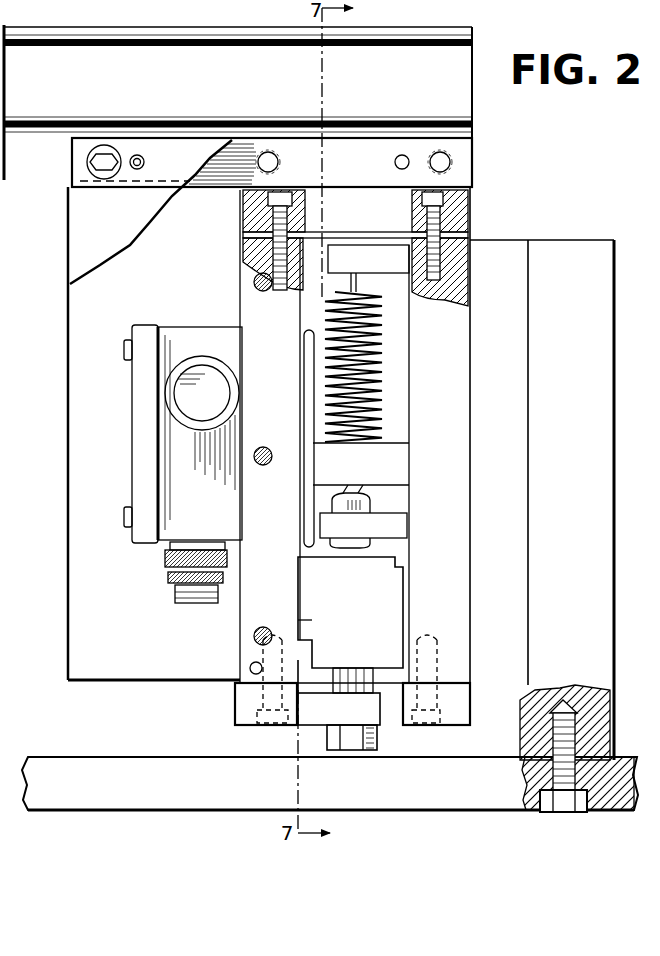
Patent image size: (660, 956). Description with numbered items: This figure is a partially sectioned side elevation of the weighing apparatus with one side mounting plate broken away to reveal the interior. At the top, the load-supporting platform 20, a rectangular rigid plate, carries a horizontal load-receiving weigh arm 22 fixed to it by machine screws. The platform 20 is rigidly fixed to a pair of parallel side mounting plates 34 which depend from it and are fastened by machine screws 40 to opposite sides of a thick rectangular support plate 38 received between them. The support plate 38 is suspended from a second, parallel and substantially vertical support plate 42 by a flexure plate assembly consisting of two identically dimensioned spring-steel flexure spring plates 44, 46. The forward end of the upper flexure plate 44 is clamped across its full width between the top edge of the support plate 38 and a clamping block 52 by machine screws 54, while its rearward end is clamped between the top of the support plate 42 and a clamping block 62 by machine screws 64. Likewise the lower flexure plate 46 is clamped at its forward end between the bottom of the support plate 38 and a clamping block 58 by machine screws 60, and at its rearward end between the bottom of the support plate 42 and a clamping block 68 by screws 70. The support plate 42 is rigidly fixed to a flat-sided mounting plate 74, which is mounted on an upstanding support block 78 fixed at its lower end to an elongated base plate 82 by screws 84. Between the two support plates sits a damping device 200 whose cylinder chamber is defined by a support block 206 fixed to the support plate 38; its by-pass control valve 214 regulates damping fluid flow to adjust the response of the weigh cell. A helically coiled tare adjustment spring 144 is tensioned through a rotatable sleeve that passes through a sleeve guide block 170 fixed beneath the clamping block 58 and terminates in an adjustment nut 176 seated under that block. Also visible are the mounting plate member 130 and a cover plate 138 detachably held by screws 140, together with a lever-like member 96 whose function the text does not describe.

The load-receiving weigh arm 22 is at (88, 30).
The load-supporting platform 20 is at (466, 158).
The side mounting plates 34 is at (118, 224).
The support plate 42 is at (429, 538).
The mounting plate 74 is at (481, 491).
The support block 78 is at (554, 491).
The flexure spring plate 44 is at (343, 232).
The clamping block 52 is at (243, 218).
The machine screws 54 is at (282, 195).
The clamping block 62 is at (473, 215).
The machine screws 64 is at (473, 194).
The machine screws 40 is at (254, 283).
The lever 96 is at (303, 296).
The tare adjustment spring 144 is at (384, 346).
The mounting plate member 130 is at (344, 471).
The by-pass control valve 214 is at (393, 513).
The support block 206 is at (331, 611).
The damping device 200 is at (400, 593).
The flexure spring plate 46 is at (388, 680).
The cover plate 138 is at (131, 428).
The screws 140 is at (124, 348).
The support plate 38 is at (240, 607).
The clamping block 58 is at (233, 702).
The machine screws 60 is at (262, 724).
The sleeve guide block 170 is at (314, 712).
The adjustment nut 176 is at (380, 740).
The clamping block 68 is at (464, 707).
The screws 70 is at (455, 728).
The base plate 82 is at (103, 757).
The screws 84 is at (570, 814).